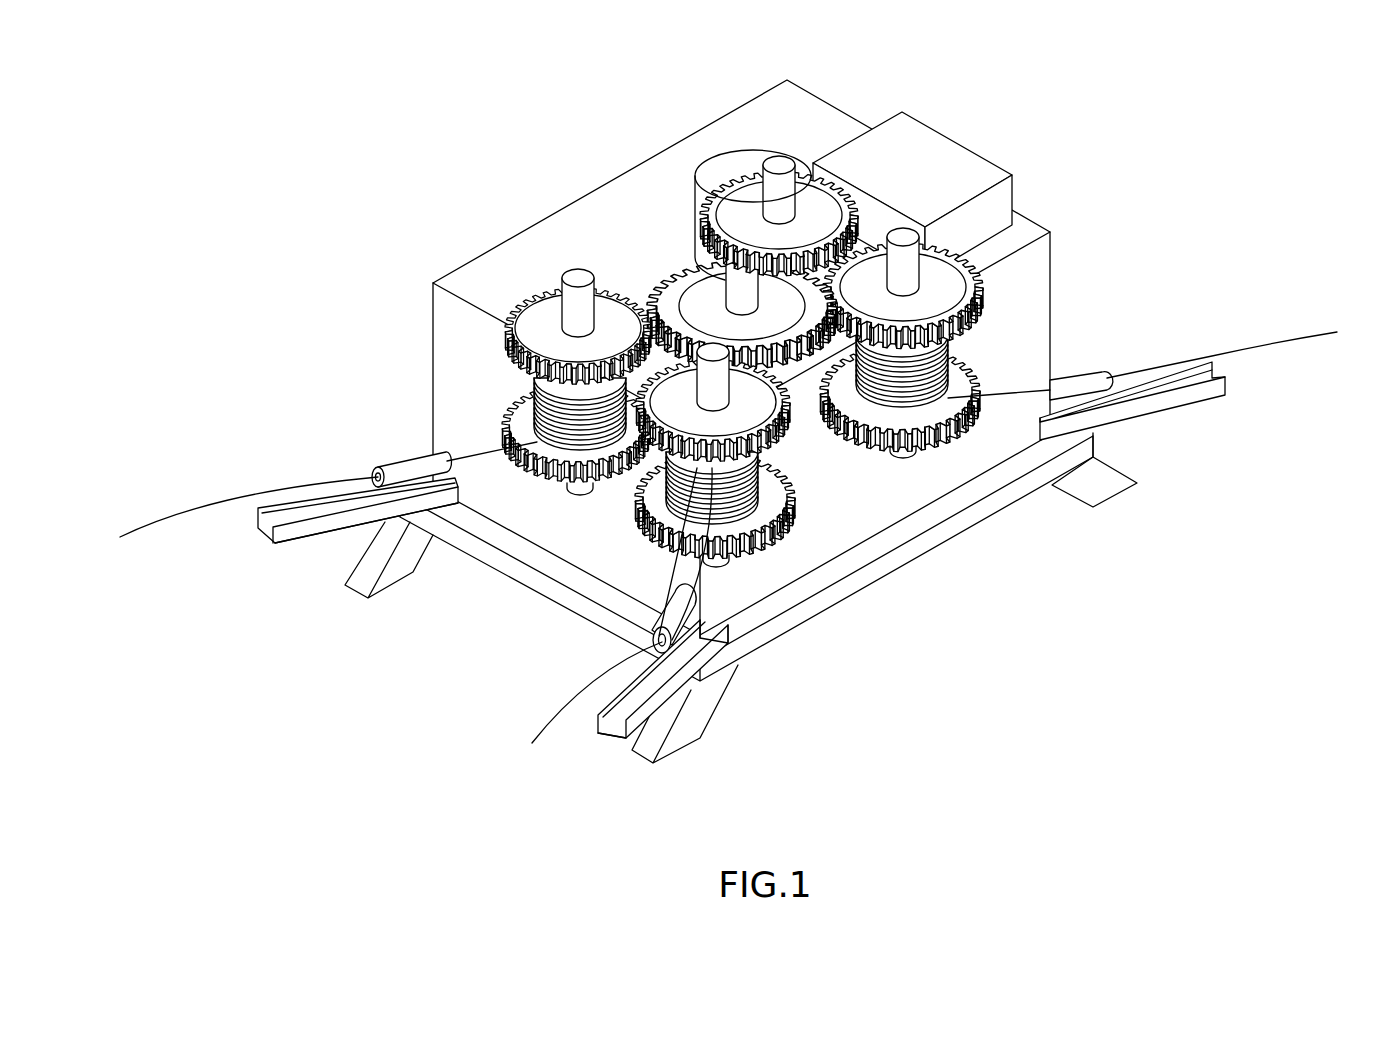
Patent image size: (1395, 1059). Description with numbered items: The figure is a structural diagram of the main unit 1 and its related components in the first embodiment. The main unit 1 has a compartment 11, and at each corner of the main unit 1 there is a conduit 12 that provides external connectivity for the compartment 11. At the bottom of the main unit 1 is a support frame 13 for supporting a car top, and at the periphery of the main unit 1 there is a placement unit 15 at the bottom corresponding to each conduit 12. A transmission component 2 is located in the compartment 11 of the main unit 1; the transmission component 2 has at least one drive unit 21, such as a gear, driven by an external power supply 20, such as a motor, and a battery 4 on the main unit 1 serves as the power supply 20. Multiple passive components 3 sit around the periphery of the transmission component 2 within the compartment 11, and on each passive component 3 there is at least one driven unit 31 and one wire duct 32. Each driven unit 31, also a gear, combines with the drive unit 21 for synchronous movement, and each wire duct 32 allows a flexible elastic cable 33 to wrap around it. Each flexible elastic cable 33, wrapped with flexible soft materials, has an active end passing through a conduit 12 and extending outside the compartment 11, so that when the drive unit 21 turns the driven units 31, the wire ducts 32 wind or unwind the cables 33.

The main unit 1 is at (1050, 262).
The transmission component 2 is at (815, 465).
The passive component 3 is at (850, 347).
The battery 4 is at (962, 140).
The compartment 11 is at (577, 527).
The conduit 12 is at (405, 388).
The support frame 13 is at (377, 557).
The placement unit 15 is at (303, 533).
The power supply 20 is at (710, 143).
The drive unit 21 is at (673, 273).
The driven unit 31 is at (985, 300).
The wire duct 32 is at (975, 338).
The flexible elastic cable 33 is at (243, 497).